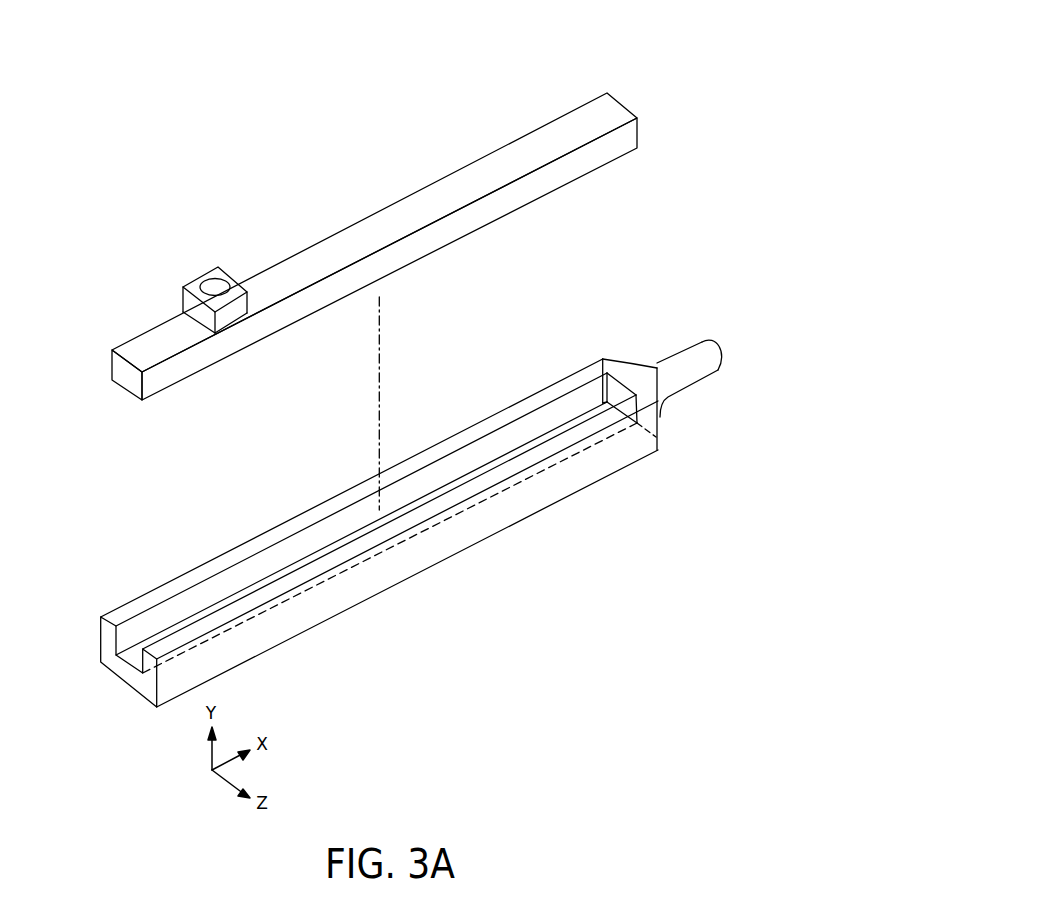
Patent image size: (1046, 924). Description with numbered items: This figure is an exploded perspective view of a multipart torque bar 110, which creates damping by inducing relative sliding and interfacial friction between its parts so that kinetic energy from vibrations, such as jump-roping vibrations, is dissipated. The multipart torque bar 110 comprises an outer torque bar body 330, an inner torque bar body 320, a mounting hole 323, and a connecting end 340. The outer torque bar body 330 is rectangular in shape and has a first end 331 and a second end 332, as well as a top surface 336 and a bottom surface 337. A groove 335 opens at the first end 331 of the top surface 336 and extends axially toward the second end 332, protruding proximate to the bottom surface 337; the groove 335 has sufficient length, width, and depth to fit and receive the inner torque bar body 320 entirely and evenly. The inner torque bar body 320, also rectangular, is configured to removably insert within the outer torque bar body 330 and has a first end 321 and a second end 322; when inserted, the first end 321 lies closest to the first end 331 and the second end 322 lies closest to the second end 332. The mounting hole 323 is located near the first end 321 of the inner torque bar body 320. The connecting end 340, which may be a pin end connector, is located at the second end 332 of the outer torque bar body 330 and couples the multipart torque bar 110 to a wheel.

The multipart torque bar 110 is at (326, 182).
The inner torque bar body 320 is at (111, 336).
The first end 321 is at (118, 356).
The second end 322 is at (615, 100).
The mounting hole 323 is at (212, 282).
The outer torque bar body 330 is at (95, 616).
The first end 331 is at (146, 693).
The second end 332 is at (660, 435).
The groove 335 is at (148, 638).
The top surface 336 is at (456, 438).
The bottom surface 337 is at (493, 535).
The connecting end 340 is at (688, 354).